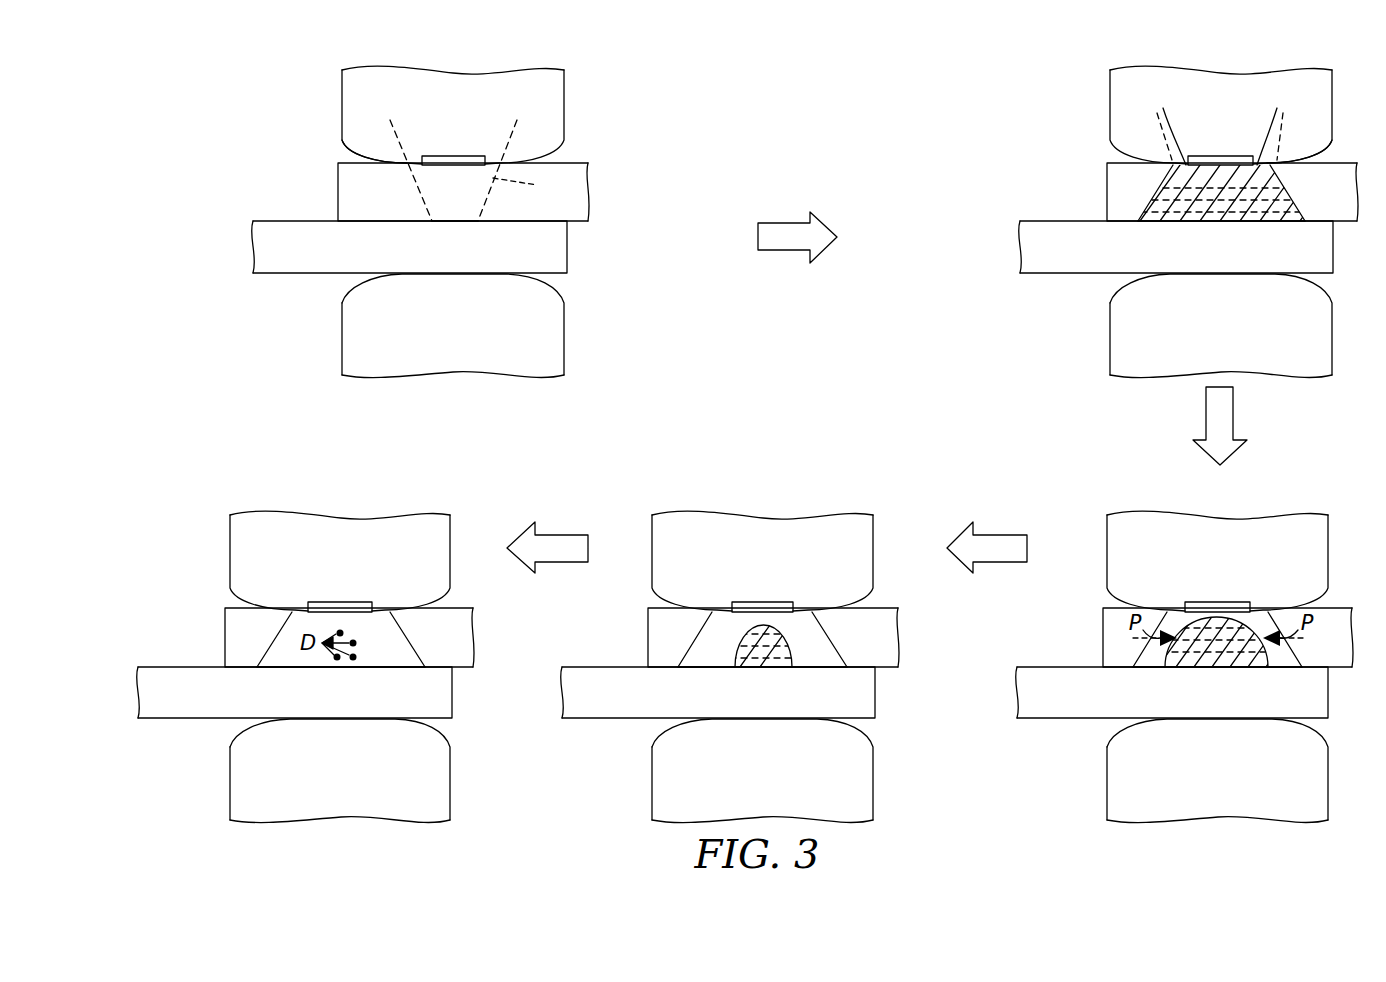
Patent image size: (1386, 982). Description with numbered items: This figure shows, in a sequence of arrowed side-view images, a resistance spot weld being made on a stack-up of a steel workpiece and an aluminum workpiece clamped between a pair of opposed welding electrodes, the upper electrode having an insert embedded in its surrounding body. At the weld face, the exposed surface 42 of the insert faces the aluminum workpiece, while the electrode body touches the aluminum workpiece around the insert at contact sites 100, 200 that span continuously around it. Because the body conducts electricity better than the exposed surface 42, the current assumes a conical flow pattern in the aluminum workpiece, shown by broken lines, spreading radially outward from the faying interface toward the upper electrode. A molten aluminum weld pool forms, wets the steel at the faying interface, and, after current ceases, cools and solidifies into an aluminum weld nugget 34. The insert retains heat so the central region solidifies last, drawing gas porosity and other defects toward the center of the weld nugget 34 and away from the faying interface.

The aluminum weld nugget 34 is at (416, 632).
The exposed surface of the insert 42 is at (440, 170).
The surface contact site 100 is at (1163, 123).
The surface contact site 200 is at (1281, 125).